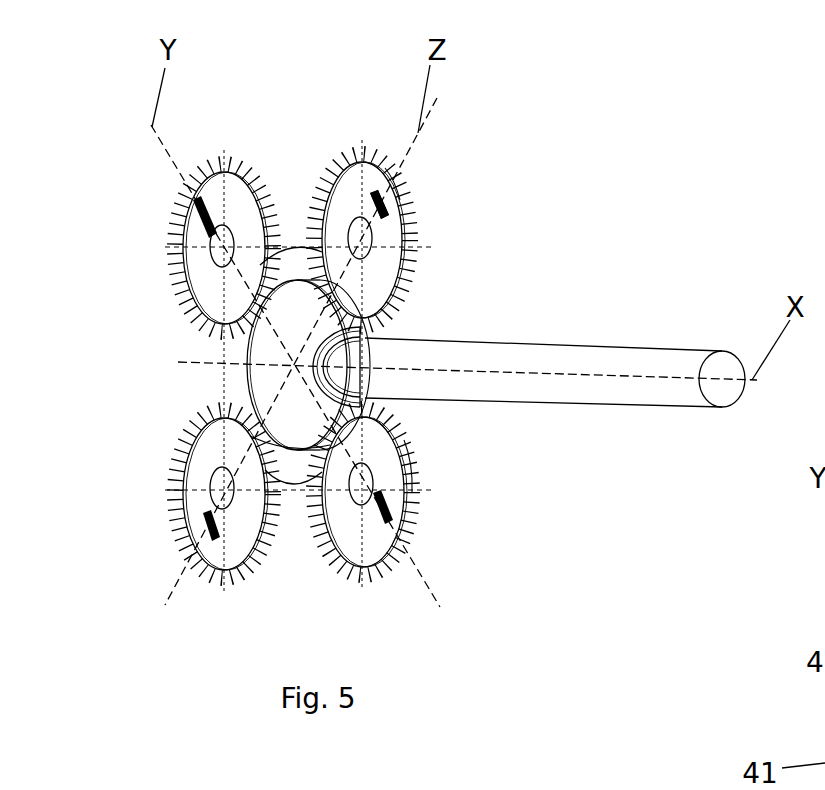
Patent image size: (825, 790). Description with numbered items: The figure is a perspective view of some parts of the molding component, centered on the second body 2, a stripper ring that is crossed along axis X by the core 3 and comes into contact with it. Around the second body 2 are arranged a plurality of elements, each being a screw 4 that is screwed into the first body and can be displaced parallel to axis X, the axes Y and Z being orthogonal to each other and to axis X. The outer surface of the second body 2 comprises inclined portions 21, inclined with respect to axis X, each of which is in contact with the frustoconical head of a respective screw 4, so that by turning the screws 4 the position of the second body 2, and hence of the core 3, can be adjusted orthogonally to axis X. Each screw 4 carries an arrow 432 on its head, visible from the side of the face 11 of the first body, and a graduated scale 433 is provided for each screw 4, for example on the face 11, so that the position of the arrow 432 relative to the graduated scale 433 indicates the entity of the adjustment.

The second body 2 is at (296, 259).
The core 3 is at (640, 360).
The screw 4 is at (212, 203).
The face 11 is at (442, 460).
The inclined portion 21 is at (252, 438).
The arrow 432 is at (380, 200).
The graduated scale 433 is at (398, 177).